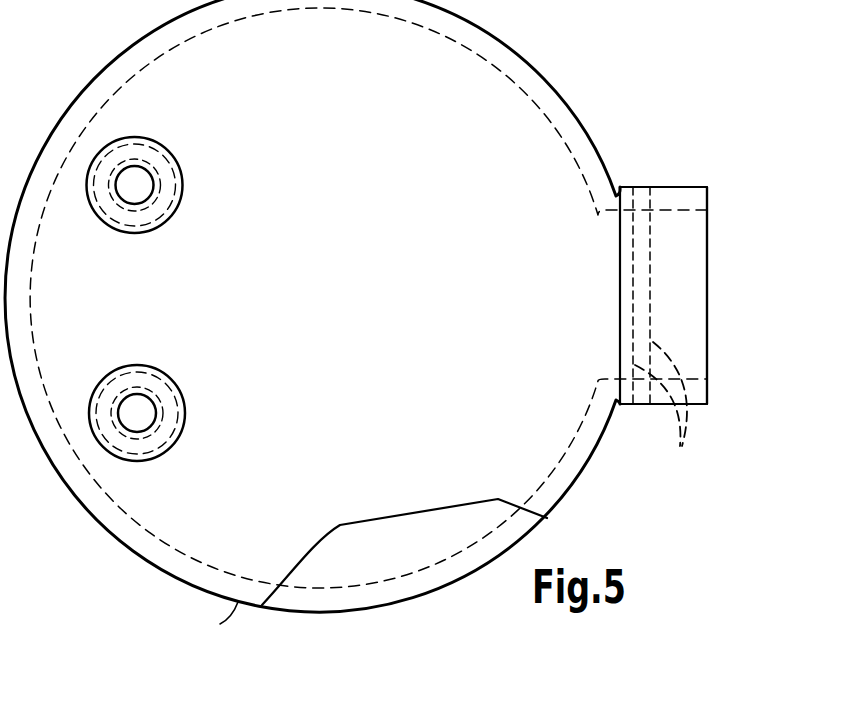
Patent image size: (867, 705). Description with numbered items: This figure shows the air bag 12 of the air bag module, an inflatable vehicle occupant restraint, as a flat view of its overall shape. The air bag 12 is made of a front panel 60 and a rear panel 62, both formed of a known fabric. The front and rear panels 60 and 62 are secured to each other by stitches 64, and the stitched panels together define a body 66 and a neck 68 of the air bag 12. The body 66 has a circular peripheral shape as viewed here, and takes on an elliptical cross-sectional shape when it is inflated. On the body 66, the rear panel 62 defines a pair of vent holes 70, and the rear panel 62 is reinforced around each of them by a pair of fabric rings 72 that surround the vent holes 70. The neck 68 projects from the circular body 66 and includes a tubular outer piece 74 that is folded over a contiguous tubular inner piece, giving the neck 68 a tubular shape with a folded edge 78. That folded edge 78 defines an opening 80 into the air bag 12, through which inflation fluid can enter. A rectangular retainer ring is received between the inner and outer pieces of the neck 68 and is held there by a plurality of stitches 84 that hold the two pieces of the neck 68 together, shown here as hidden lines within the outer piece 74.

The air bag 12 is at (97, 574).
The front panel 60 is at (363, 598).
The rear panel 62 is at (358, 483).
The stitches 64 is at (231, 572).
The body 66 is at (222, 470).
The neck 68 is at (680, 180).
The vent holes 70 is at (104, 210).
The fabric rings 72 is at (133, 217).
The tubular outer piece 74 is at (620, 285).
The folded edge 78 is at (707, 237).
The opening 80 is at (723, 265).
The stitches 84 is at (663, 414).